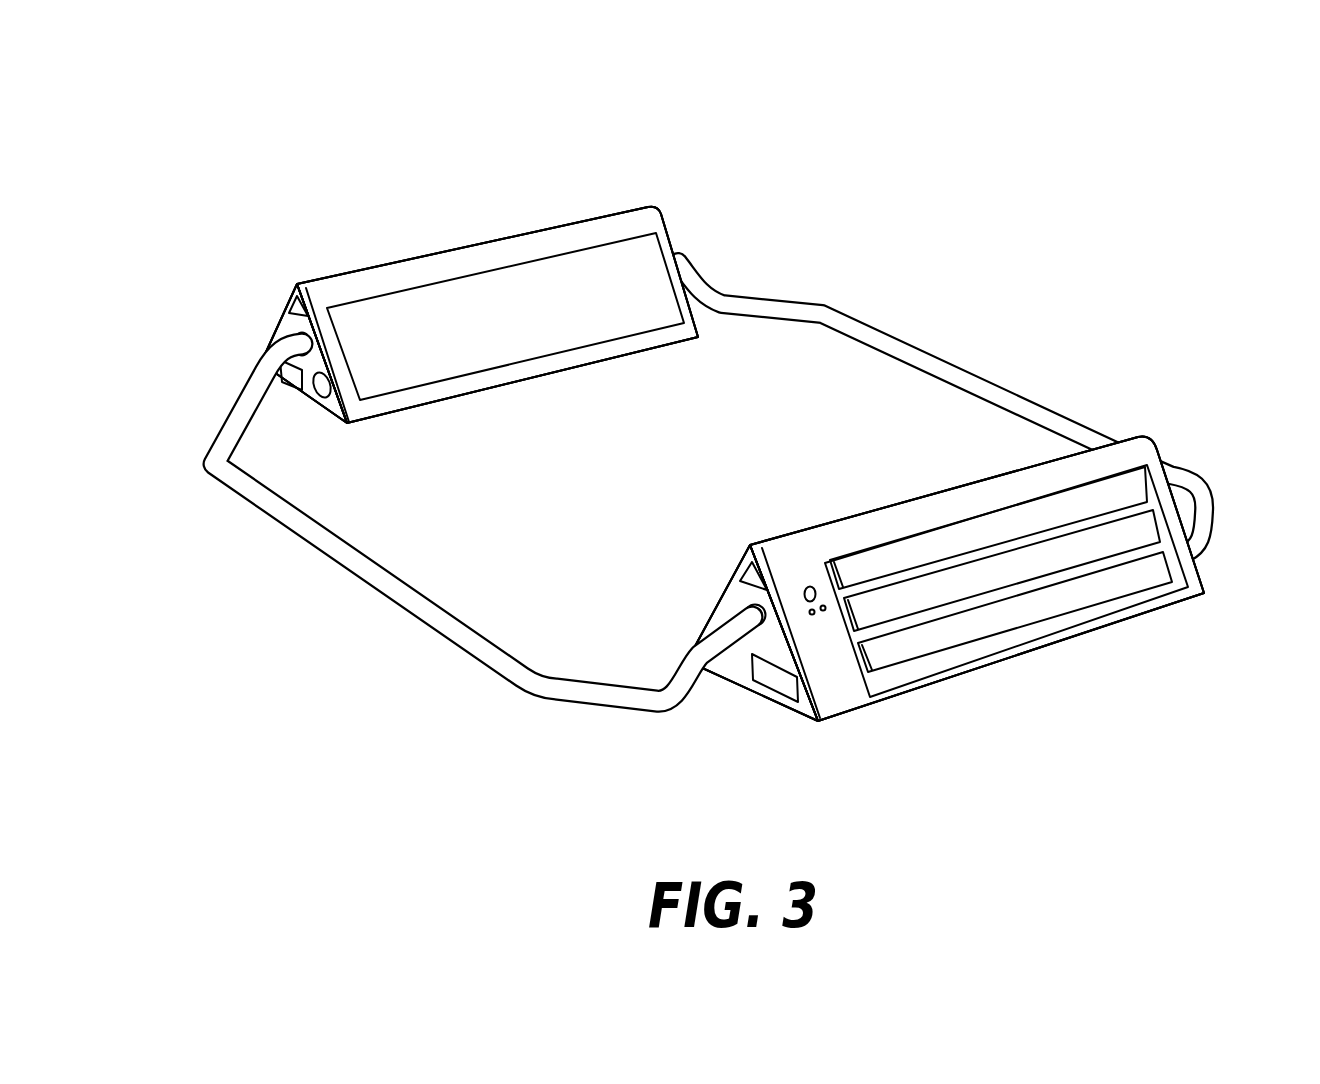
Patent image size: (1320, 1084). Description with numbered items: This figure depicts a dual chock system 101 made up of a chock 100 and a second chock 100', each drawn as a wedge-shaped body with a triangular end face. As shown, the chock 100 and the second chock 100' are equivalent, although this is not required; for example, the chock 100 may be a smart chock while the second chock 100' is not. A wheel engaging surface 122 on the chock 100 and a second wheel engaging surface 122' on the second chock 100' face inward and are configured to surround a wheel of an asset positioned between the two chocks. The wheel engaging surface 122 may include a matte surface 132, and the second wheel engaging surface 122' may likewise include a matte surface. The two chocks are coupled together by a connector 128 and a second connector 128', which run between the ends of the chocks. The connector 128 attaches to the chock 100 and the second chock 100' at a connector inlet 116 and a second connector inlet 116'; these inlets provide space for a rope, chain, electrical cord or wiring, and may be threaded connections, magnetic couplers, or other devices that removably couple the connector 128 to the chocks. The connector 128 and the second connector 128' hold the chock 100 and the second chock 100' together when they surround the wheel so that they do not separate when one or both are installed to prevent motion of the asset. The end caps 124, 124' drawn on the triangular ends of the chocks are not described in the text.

The chock 100 is at (482, 246).
The second chock 100' is at (967, 530).
The dual chock system 101 is at (973, 178).
The connector inlet 116 is at (233, 324).
The second connector inlet 116' is at (694, 572).
The wheel engaging surface 122 is at (497, 302).
The second wheel engaging surface 122' is at (977, 579).
The end cap 124 is at (305, 298).
The end cap of second device 124' is at (806, 656).
The connector 128 is at (483, 522).
The second connector 128' is at (941, 407).
The matte surface 132 is at (540, 278).